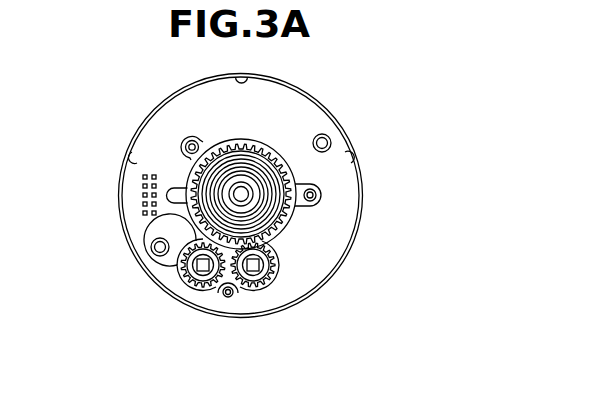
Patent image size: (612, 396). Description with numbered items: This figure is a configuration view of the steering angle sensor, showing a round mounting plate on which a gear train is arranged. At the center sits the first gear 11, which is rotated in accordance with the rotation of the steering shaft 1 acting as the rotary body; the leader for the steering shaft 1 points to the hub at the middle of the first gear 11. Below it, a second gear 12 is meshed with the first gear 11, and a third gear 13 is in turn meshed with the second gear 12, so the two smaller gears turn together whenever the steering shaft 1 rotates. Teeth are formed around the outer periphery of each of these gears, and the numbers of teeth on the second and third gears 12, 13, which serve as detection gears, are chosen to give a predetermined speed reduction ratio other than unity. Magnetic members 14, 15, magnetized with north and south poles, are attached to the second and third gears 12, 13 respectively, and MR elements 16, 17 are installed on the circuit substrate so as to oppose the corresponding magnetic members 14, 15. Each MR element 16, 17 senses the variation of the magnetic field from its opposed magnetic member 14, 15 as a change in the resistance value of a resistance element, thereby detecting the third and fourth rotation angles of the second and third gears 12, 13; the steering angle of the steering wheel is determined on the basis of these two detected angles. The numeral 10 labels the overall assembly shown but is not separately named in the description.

The steering shaft 1 is at (243, 192).
The printer unit 10 is at (88, 110).
The first gear 11 is at (286, 182).
The second gear 12 is at (276, 236).
The third gear 13 is at (195, 243).
The magnetic member 14 is at (266, 262).
The magnetic member 15 is at (209, 268).
The MR element 16 is at (259, 264).
The MR element 17 is at (196, 270).